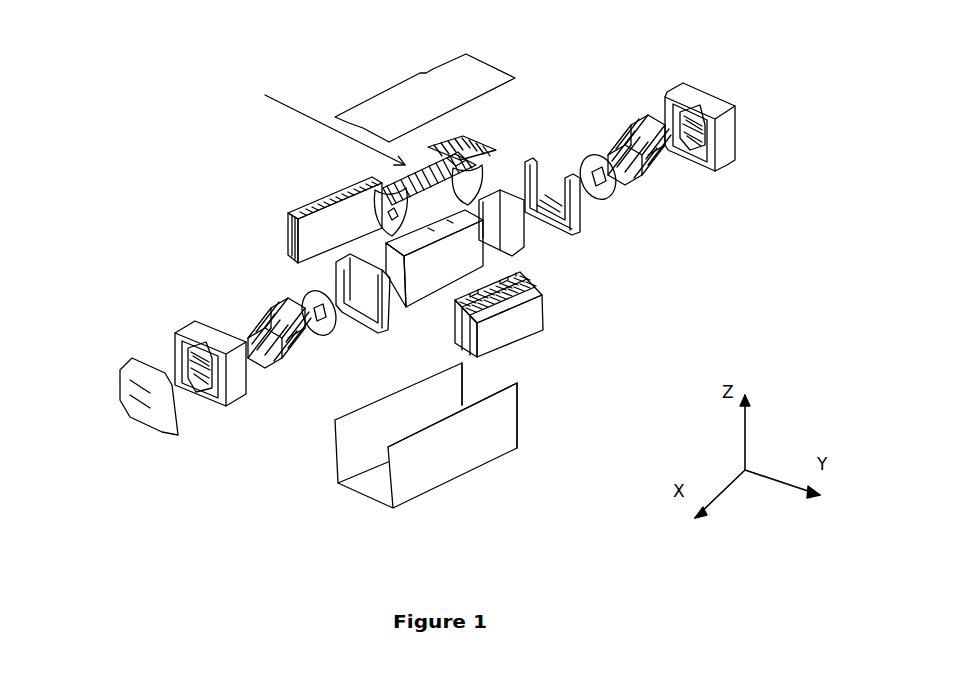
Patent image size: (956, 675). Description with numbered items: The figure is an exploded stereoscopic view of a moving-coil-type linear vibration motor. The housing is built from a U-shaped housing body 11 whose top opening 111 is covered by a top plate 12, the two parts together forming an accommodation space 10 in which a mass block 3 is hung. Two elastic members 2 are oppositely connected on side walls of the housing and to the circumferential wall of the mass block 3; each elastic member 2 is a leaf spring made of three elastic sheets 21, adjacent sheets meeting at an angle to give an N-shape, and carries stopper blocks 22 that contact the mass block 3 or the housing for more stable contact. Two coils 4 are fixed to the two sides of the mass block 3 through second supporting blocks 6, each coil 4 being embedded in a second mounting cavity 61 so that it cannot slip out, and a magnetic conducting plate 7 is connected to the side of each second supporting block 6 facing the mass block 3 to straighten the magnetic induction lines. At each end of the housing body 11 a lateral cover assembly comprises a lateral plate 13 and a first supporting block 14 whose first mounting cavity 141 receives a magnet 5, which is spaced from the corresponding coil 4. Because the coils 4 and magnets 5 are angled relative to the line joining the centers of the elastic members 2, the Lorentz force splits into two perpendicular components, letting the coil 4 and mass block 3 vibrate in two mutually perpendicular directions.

The elastic member 2 is at (313, 198).
The mass block 3 is at (413, 305).
The coil 4 is at (308, 293).
The magnet 5 is at (283, 375).
The second supporting block 6 is at (646, 164).
The second mounting cavity 61 is at (552, 192).
The magnetic conducting plate 7 is at (528, 245).
The accommodation space 10 is at (462, 457).
The housing body 11 is at (520, 405).
The top opening 111 is at (482, 375).
The top plate 12 is at (385, 85).
The lateral plate 13 is at (115, 378).
The first supporting block 14 is at (152, 382).
The first mounting cavity 141 is at (218, 372).
The elastic sheet 21 is at (594, 314).
The stopper block 22 is at (525, 277).